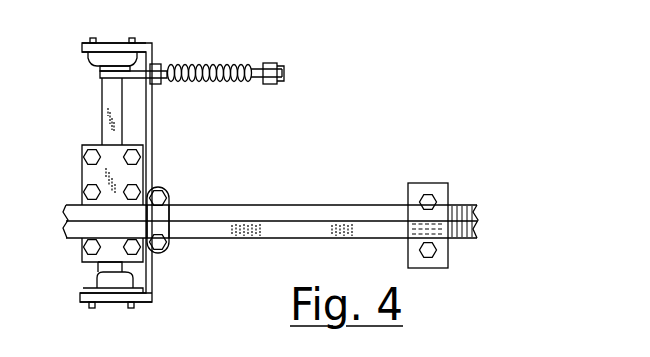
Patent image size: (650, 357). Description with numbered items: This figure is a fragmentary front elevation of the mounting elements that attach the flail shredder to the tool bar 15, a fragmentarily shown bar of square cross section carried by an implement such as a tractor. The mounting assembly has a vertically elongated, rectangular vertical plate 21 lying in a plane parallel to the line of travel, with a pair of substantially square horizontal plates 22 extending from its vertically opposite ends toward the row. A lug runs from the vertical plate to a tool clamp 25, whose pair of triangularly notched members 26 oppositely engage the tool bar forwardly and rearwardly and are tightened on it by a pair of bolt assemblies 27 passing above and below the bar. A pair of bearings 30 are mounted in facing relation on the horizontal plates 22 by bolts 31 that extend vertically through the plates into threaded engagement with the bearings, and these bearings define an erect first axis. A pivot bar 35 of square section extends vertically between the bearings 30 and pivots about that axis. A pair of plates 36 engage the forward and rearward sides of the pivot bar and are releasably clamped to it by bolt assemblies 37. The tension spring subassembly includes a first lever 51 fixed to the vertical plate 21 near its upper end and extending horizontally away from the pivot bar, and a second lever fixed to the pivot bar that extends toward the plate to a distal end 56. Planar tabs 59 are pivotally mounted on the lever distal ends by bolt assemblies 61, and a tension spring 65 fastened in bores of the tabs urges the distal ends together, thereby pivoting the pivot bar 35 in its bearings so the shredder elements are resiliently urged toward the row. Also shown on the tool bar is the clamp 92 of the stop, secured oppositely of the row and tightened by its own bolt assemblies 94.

The tool bar 15 is at (266, 205).
The vertical plate 21 is at (153, 289).
The horizontal plates 22 is at (108, 42).
The tool clamp 25 is at (180, 254).
The triangularly notched members 26 is at (164, 253).
The bolt assemblies 27 is at (155, 198).
The bearings 30 is at (90, 58).
The bolts 31 is at (90, 38).
The pivot bar 35 is at (102, 93).
The plates 36 is at (95, 172).
The bolt assemblies 37 is at (84, 191).
The first lever 51 is at (133, 78).
The distal end 56 is at (279, 79).
The planar tabs 59 is at (280, 75).
The bolt assemblies 61 is at (152, 67).
The tension spring 65 is at (212, 64).
The clamp 92 is at (455, 256).
The bolt assemblies 94 is at (422, 249).